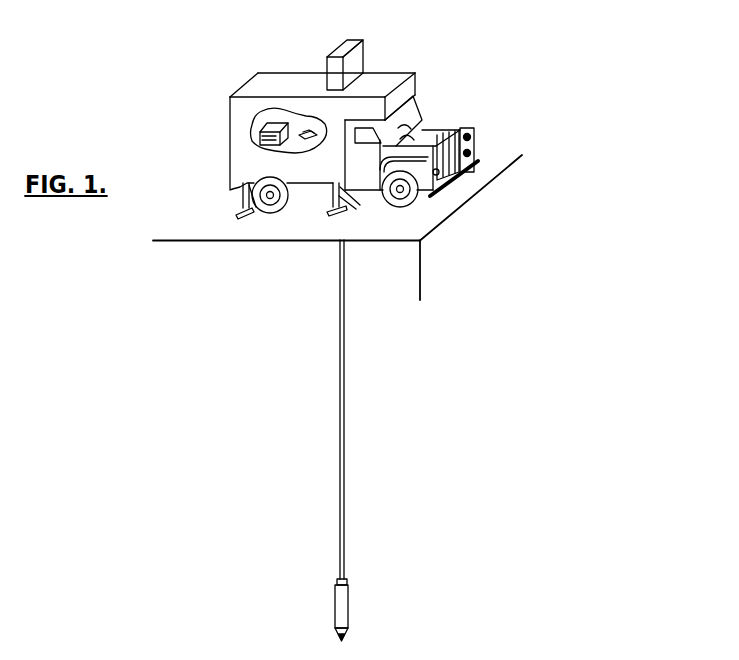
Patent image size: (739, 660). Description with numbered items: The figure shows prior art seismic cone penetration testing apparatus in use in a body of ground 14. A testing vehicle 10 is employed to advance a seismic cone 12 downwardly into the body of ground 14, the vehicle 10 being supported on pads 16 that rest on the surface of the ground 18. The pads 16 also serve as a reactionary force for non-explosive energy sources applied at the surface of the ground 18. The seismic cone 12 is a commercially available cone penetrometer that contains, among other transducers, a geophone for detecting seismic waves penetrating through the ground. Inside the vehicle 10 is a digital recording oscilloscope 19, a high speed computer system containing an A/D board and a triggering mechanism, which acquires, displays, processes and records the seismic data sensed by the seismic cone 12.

The testing vehicle 10 is at (480, 86).
The seismic cone 12 is at (351, 606).
The body of ground 14 is at (249, 361).
The pads 16 is at (237, 213).
The surface of the ground 18 is at (434, 210).
The digital recording oscilloscope 19 is at (262, 140).